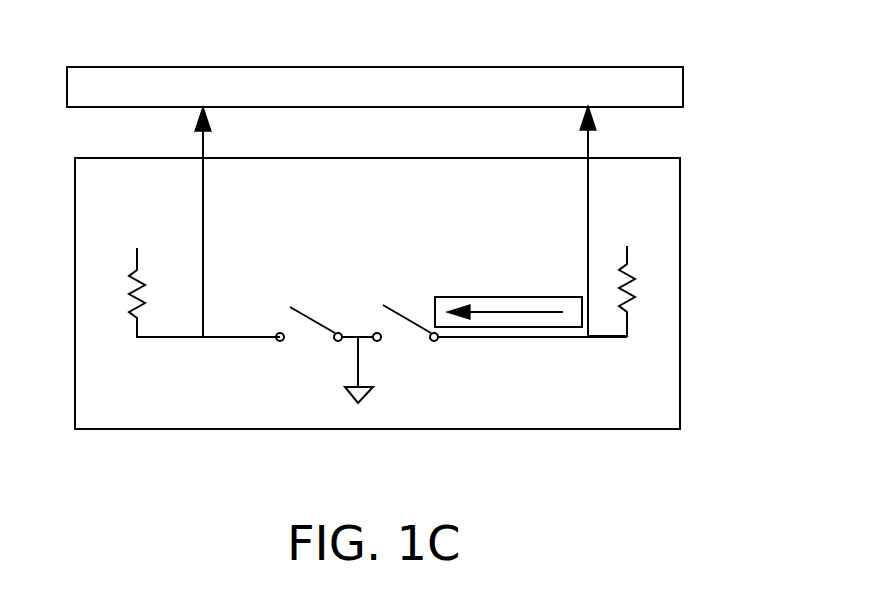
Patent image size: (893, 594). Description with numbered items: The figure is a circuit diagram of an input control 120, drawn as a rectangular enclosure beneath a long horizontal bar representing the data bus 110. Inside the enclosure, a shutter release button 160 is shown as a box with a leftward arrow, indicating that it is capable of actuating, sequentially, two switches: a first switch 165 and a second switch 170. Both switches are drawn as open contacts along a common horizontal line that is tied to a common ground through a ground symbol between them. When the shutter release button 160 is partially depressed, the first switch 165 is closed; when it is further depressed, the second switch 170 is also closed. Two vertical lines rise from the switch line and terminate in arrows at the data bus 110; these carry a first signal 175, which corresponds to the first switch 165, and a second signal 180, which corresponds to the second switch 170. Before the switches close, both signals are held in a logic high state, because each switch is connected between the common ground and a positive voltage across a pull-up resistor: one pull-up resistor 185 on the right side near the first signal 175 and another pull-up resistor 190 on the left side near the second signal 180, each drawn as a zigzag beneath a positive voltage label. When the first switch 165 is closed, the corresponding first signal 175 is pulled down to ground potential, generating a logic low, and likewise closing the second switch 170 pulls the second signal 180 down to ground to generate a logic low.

The data bus 110 is at (495, 65).
The input control 120 is at (681, 193).
The shutter release button 160 is at (492, 297).
The switch S1 165 is at (402, 323).
The switch S2 170 is at (308, 323).
The signal 175 is at (587, 205).
The signal 180 is at (205, 205).
The pull-up resistor 185 is at (637, 292).
The pull-up resistor 190 is at (122, 300).